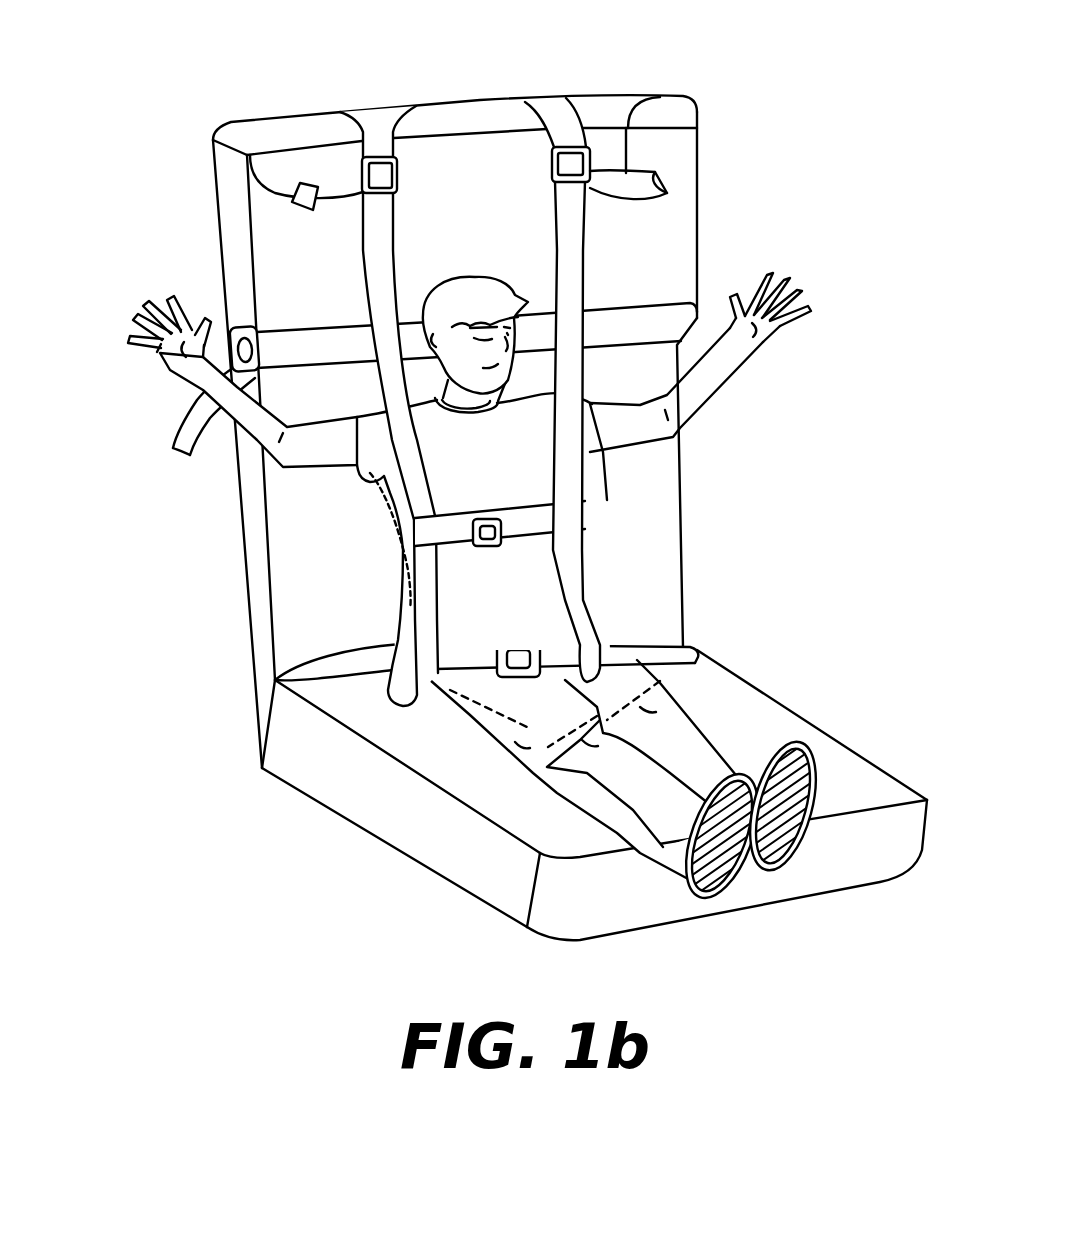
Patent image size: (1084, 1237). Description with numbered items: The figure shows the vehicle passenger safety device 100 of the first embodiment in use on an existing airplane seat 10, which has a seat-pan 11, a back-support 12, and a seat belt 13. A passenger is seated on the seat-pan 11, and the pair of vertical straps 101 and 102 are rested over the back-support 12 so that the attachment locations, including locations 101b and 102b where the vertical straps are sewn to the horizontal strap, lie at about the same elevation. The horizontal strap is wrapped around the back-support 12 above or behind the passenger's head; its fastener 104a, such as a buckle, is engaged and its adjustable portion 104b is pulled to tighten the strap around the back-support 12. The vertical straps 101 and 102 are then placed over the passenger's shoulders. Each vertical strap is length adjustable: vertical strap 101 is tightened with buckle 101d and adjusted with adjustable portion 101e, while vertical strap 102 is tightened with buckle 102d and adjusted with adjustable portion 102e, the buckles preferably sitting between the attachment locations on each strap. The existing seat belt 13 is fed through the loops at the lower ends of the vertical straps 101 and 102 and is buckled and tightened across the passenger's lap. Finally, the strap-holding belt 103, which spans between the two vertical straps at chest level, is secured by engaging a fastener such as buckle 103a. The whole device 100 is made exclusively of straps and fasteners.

The existing airplane seat 10 is at (252, 660).
The seat-pan 11 is at (807, 721).
The back-support 12 is at (697, 113).
The seat belt 13 is at (697, 649).
The vehicle passenger safety device 100 is at (700, 322).
The vertical strap 101 is at (290, 113).
The location 101b is at (358, 328).
The buckle 101d is at (395, 130).
The adjustable portion 101e is at (232, 124).
The vertical strap 102 is at (553, 99).
The location 102b is at (593, 313).
The buckle 102d is at (552, 168).
The adjustable portion 102e is at (667, 93).
The strap-holding belt 103 is at (583, 524).
The buckle 103a is at (505, 514).
The fastener 104a is at (228, 326).
The adjustable portion 104b is at (176, 448).